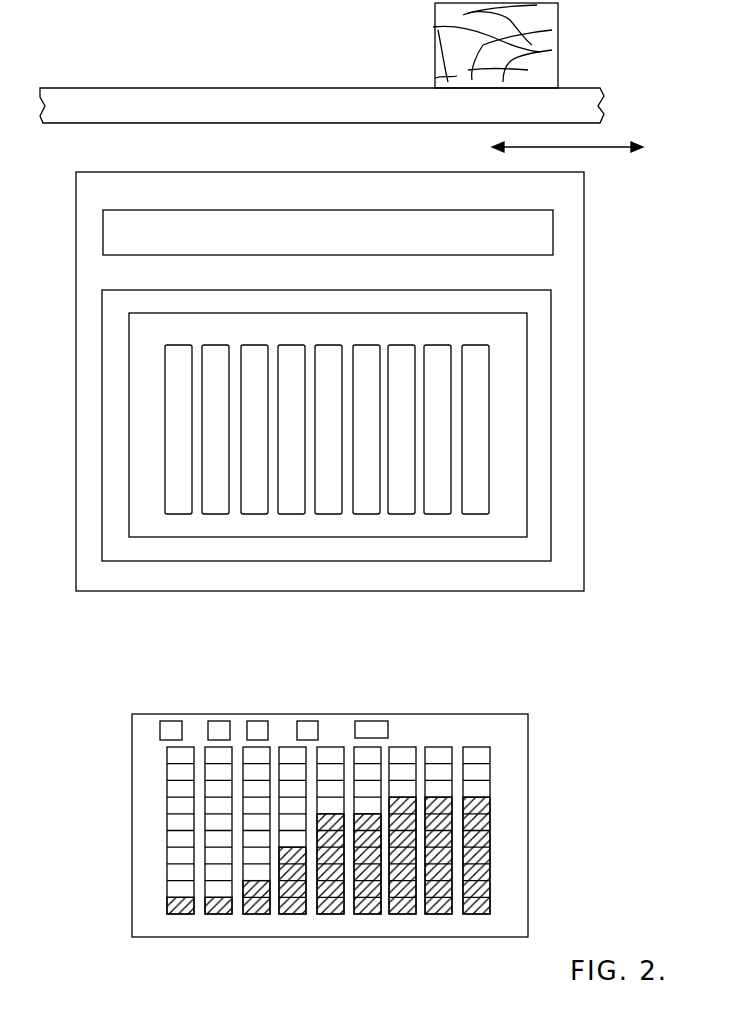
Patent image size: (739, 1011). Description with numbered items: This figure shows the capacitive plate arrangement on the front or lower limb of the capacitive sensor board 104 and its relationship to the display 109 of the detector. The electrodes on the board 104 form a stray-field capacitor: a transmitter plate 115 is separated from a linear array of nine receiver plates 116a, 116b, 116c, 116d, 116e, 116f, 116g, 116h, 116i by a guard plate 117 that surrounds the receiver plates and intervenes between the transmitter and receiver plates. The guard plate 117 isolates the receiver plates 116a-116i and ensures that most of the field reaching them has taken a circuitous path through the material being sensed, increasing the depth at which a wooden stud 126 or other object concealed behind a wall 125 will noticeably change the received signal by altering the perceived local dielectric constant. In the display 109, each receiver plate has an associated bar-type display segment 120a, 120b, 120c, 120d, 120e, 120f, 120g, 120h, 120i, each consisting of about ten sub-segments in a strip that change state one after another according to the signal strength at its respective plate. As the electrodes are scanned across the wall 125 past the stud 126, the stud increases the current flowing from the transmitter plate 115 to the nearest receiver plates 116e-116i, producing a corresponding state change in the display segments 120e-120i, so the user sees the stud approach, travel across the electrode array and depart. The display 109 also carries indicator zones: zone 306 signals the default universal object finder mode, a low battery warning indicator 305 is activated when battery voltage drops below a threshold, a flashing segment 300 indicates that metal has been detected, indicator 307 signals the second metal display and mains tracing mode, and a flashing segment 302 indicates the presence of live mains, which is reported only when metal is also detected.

The capacitive sensor board 104 is at (567, 395).
The display 109 is at (518, 865).
The transmitter plate 115 is at (538, 233).
The receiver plate 116a is at (180, 508).
The receiver plate 116b is at (218, 504).
The receiver plate 116c is at (257, 503).
The receiver plate 116d is at (293, 503).
The receiver plate 116e is at (329, 505).
The receiver plate 116f is at (367, 505).
The receiver plate 116g is at (403, 503).
The receiver plate 116h is at (442, 503).
The receiver plate 116i is at (477, 503).
The guard plate 117 is at (543, 348).
The bar-type display segment 120a is at (182, 914).
The bar-type display segment 120b is at (222, 914).
The bar-type display segment 120c is at (255, 914).
The bar-type display segment 120d is at (293, 912).
The bar-type display segment 120e is at (329, 910).
The bar-type display segment 120f is at (367, 910).
The bar-type display segment 120g is at (402, 910).
The bar-type display segment 120h is at (445, 910).
The bar-type display segment 120i is at (475, 910).
The wall 125 is at (293, 108).
The wooden stud 126 is at (450, 28).
The flashing segment 300 is at (266, 730).
The flashing segment 302 is at (388, 728).
The low battery warning indicator 305 is at (315, 730).
The indicator zone 306 is at (160, 727).
The indicator 307 is at (210, 732).